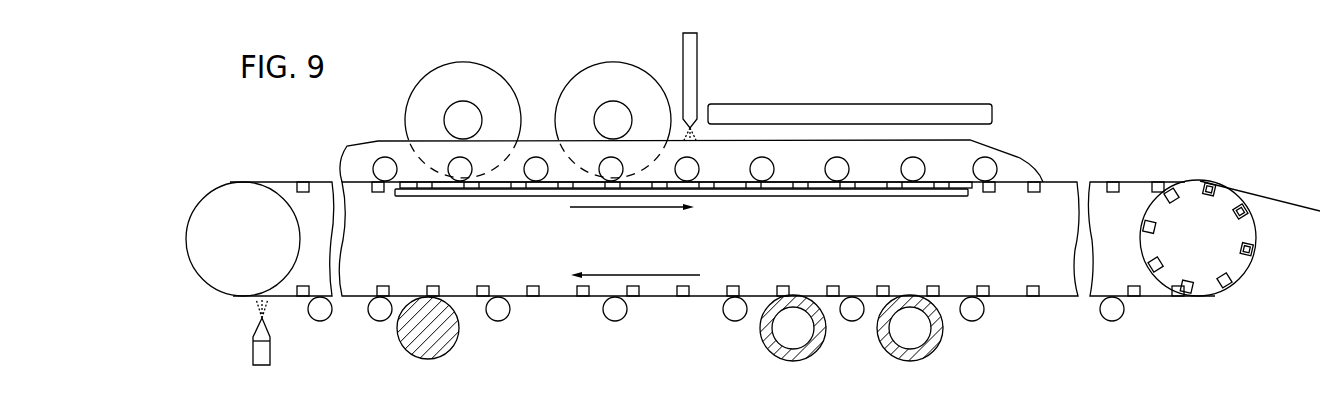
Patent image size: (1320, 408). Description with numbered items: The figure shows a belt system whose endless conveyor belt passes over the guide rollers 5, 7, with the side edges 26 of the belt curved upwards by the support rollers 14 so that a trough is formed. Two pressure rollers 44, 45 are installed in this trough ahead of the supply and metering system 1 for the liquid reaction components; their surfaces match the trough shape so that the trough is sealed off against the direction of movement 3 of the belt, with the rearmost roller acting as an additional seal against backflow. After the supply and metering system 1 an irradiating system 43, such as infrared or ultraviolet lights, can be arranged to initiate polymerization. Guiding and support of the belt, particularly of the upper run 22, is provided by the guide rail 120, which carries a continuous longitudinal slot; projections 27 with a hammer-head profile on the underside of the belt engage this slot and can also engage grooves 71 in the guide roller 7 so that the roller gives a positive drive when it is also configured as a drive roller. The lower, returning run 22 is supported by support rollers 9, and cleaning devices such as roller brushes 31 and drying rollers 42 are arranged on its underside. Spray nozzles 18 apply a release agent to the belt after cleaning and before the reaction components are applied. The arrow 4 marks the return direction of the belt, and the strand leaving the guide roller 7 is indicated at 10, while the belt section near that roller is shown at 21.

The supply and metering system 1 is at (696, 66).
The direction of movement 3 is at (622, 210).
The return direction arrow 4 is at (626, 272).
The guide roller 5 is at (229, 198).
The guide roller 7 is at (1190, 196).
The support rollers 9 is at (507, 313).
The web 10 is at (1281, 198).
The support rollers 14 is at (841, 150).
The spray nozzles 18 is at (255, 330).
The conveyor belt section 21 is at (1140, 180).
The upper run / returning run of belt 22 is at (1062, 297).
The side edges 26 is at (530, 148).
The projections 27 is at (1112, 182).
The roller brushes 31 is at (773, 352).
The drying rollers 42 is at (447, 343).
The irradiating system 43 is at (797, 107).
The pressure roller 44 is at (594, 78).
The pressure roller 45 is at (410, 106).
The grooves 71 is at (1256, 238).
The guide rail 120 is at (930, 188).